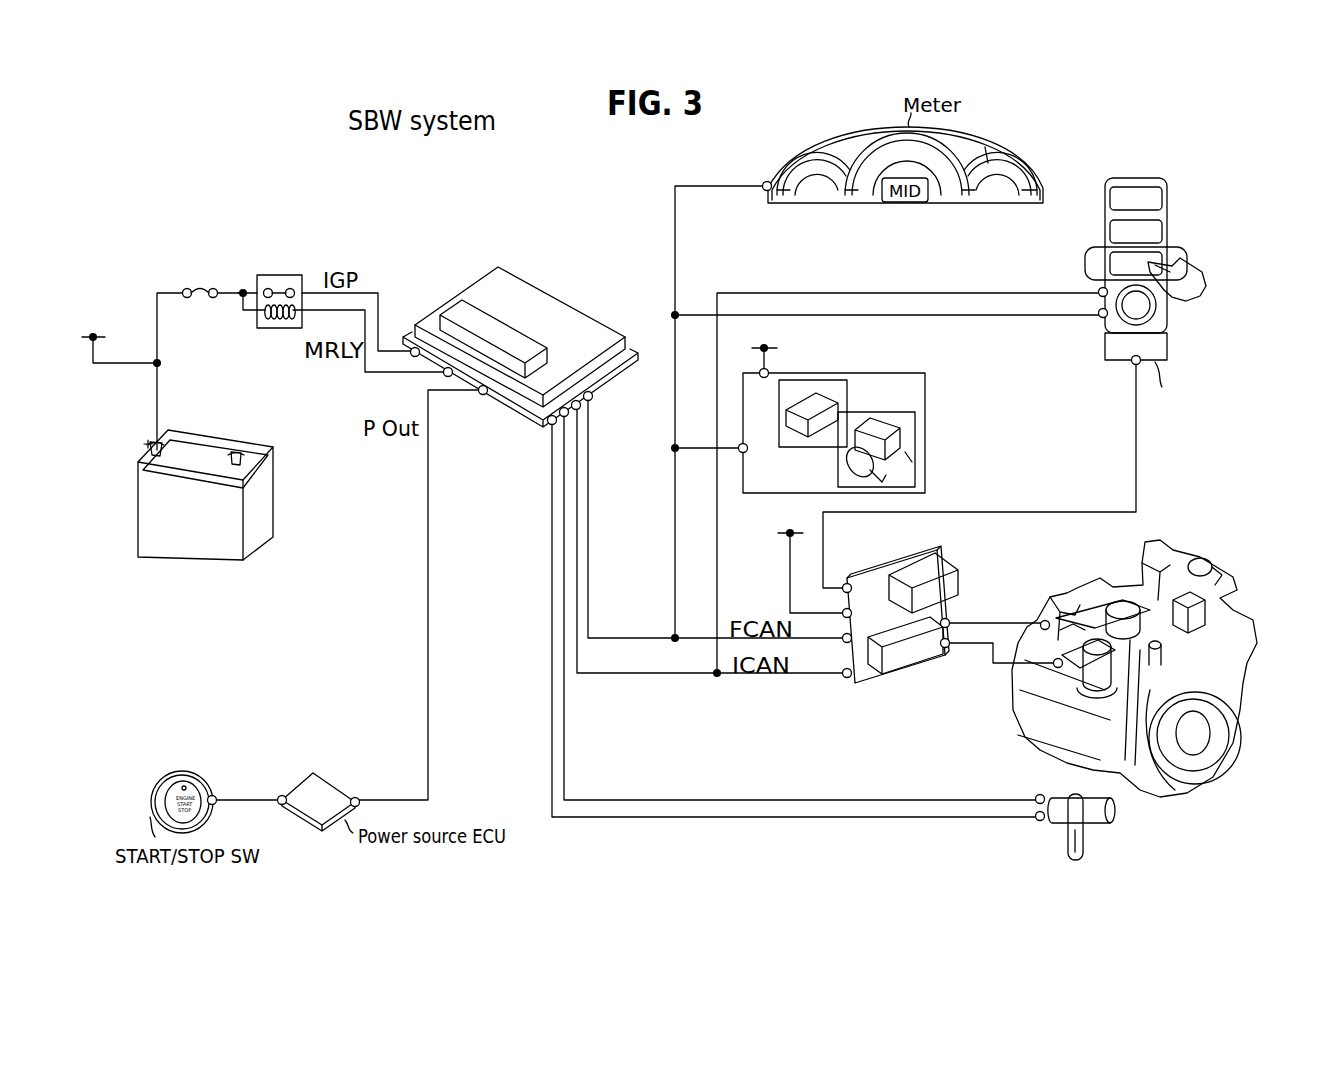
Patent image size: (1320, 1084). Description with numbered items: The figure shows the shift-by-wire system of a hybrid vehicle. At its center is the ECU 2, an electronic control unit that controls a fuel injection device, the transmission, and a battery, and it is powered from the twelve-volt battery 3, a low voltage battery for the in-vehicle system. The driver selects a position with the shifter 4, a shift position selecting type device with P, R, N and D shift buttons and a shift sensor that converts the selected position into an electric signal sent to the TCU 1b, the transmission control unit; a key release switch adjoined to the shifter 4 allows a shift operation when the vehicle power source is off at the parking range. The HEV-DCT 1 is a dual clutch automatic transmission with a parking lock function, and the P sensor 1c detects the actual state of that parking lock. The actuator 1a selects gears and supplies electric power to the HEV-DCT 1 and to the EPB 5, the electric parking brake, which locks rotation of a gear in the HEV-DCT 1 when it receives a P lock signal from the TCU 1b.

The HEV-DCT 1 is at (1193, 783).
The actuator 1a is at (1097, 643).
The TCU 1b is at (893, 673).
The P sensor 1c is at (1067, 837).
The ECU 2 is at (480, 277).
The 12V-battery 3 is at (188, 557).
The shifter 4 is at (1135, 175).
The EPB 5 is at (927, 419).